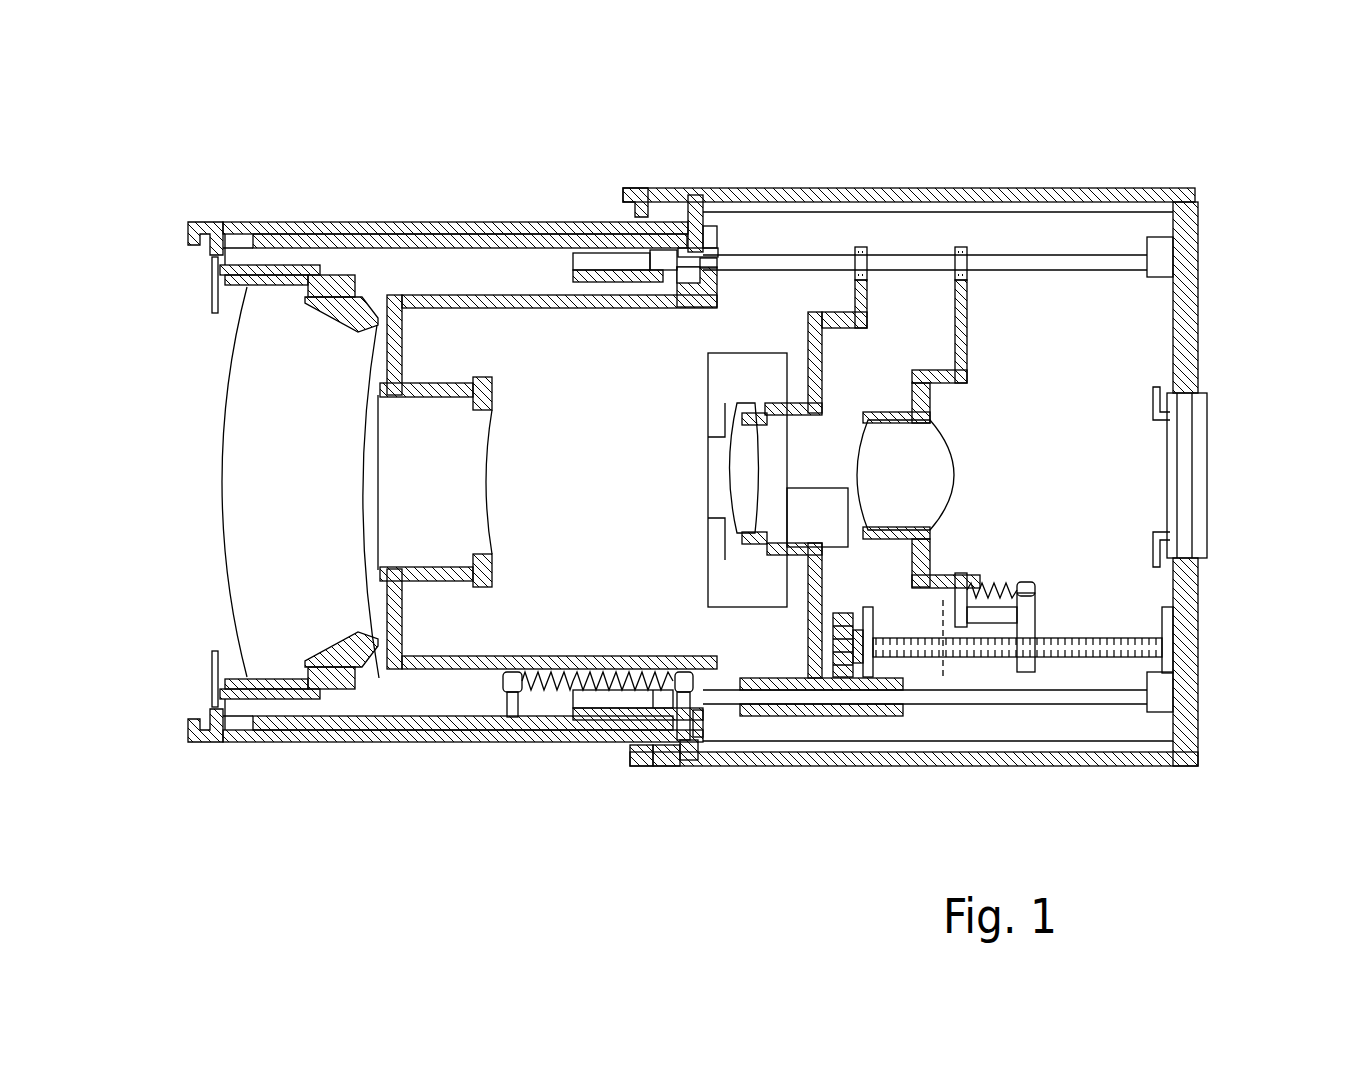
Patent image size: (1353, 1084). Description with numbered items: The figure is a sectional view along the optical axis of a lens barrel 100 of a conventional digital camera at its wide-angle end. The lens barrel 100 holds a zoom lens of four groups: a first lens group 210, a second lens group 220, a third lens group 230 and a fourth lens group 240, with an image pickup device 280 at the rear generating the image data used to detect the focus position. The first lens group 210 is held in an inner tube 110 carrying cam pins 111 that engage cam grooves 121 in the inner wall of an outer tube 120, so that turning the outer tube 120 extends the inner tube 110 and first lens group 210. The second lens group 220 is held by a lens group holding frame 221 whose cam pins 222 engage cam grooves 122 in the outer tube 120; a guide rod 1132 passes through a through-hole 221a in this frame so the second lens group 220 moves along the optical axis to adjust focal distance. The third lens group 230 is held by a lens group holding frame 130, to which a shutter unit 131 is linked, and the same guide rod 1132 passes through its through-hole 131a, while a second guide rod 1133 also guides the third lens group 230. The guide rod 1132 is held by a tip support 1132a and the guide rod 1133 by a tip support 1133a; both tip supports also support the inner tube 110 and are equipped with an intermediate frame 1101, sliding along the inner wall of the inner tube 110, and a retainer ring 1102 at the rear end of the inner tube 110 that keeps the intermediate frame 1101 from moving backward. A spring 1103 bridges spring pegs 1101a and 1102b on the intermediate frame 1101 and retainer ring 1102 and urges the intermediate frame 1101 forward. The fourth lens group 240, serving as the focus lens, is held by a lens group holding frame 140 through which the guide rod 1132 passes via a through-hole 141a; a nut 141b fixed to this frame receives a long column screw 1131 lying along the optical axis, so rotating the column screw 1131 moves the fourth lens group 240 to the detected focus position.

The lens barrel 100 is at (800, 165).
The inner tube 110 is at (338, 222).
The intermediate frame 1101 is at (443, 235).
The spring peg 1101a is at (513, 700).
The retainer ring 1102 is at (673, 235).
The spring peg 1102b is at (698, 720).
The spring 1103 is at (543, 672).
The cam pin 111 is at (673, 753).
The outer tube 120 is at (1064, 188).
The cam groove 121 is at (690, 747).
The cam groove 122 is at (717, 205).
The lens group holding frame 130 is at (808, 321).
The shutter unit 131 is at (722, 377).
The through-hole 131a is at (863, 262).
The column screw 1131 is at (1160, 648).
The guide rod 1132 is at (1127, 260).
The tip support 1132a is at (572, 272).
The guide rod 1133 is at (1140, 693).
The tip support 1133a is at (603, 695).
The lens group holding frame 140 is at (930, 377).
The through-hole 141a is at (973, 253).
The nut 141b is at (1028, 630).
The first lens group 210 is at (240, 503).
The second lens group 220 is at (472, 443).
The lens group holding frame 221 is at (550, 308).
The through-hole 221a is at (700, 264).
The cam pin 222 is at (707, 231).
The third lens group 230 is at (740, 482).
The fourth lens group 240 is at (945, 470).
The image pickup device 280 is at (1187, 471).